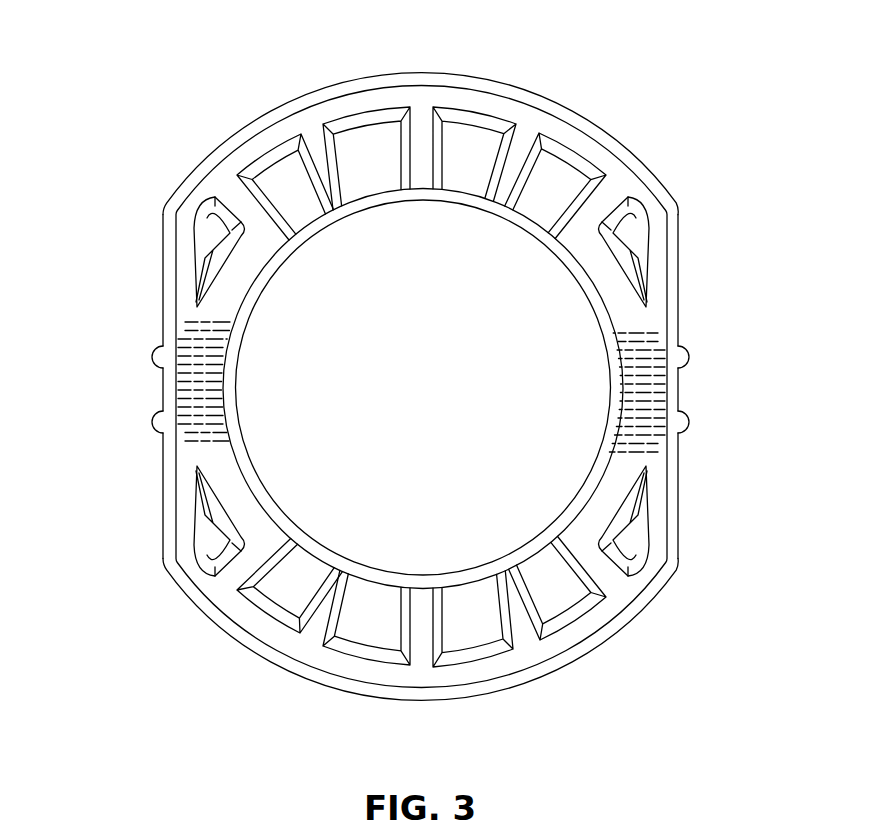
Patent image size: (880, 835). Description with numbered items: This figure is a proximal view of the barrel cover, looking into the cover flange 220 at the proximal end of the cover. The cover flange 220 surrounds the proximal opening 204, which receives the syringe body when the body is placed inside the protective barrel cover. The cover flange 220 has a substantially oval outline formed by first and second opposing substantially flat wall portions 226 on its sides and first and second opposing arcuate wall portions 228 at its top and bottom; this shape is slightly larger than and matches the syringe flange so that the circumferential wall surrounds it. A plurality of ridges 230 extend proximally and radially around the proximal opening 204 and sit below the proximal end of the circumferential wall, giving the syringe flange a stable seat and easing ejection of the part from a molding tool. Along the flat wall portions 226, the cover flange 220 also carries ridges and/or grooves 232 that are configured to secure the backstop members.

The proximal opening 204 is at (567, 406).
The cover flange 220 is at (152, 141).
The substantially flat wall portions 226 is at (163, 295).
The arcuate wall portions 228 is at (523, 98).
The ridges 230 is at (600, 212).
The ridges and/or grooves 232 is at (152, 357).